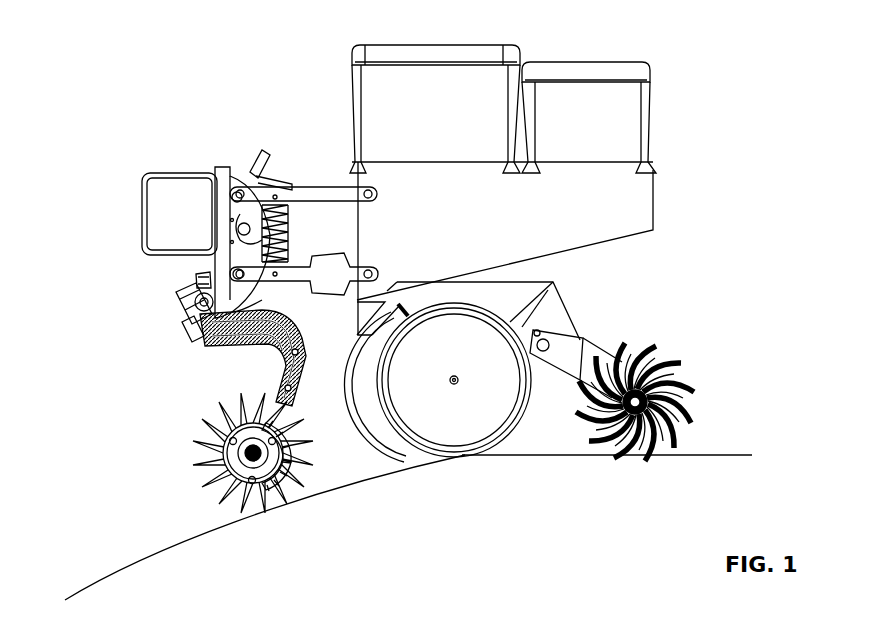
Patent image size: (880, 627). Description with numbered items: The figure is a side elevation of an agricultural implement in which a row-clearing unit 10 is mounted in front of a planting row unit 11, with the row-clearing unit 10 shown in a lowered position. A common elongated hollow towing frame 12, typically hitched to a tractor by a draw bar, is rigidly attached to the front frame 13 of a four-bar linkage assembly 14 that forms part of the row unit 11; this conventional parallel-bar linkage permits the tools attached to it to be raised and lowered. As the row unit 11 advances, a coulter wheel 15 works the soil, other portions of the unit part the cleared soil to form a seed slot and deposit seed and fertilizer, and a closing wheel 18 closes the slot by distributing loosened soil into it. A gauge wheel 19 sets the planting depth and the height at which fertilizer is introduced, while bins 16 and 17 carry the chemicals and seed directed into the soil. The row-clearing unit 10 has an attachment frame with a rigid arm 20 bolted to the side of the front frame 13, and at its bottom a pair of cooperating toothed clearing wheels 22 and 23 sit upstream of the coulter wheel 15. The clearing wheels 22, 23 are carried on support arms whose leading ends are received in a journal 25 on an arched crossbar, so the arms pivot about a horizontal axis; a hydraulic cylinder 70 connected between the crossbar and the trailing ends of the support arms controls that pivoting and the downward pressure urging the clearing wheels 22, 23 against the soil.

The row-clearing unit 10 is at (206, 393).
The planting row unit 11 is at (657, 134).
The towing frame 12 is at (142, 215).
The front frame 13 is at (220, 168).
The four-bar linkage assembly 14 is at (331, 184).
The coulter wheel 15 is at (366, 446).
The bin 16 is at (436, 46).
The bin 17 is at (584, 63).
The closing wheel 18 is at (638, 458).
The gauge wheel 19 is at (495, 446).
The rigid arm 20 is at (258, 290).
The toothed clearing wheel 22 is at (200, 456).
The toothed clearing wheel 23 is at (214, 488).
The journal 25 is at (188, 330).
The hydraulic cylinder 70 is at (204, 342).